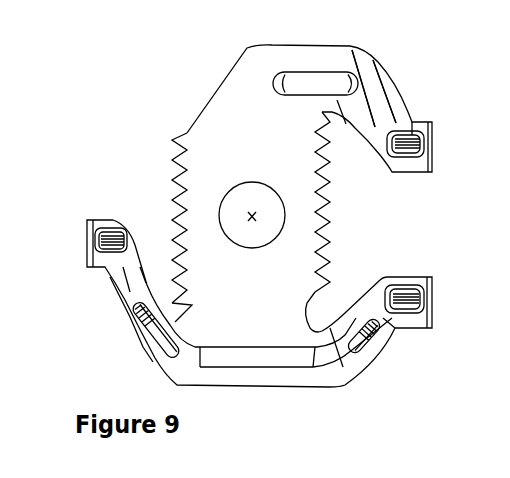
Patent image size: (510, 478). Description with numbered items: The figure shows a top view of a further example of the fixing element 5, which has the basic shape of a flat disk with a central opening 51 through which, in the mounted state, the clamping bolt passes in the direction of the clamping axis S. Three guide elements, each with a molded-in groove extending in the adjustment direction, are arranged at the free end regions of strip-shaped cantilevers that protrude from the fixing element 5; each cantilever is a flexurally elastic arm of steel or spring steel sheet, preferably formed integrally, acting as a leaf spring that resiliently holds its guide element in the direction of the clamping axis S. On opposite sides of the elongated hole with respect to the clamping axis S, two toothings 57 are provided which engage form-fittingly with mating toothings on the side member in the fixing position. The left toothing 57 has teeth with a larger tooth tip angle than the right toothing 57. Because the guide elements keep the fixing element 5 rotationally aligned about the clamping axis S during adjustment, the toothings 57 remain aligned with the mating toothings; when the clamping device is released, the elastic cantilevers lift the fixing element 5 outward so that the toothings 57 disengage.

The fixing element 5 is at (212, 70).
The central opening 51 is at (247, 197).
The toothing 57 is at (316, 237).
The clamping axis S is at (249, 215).